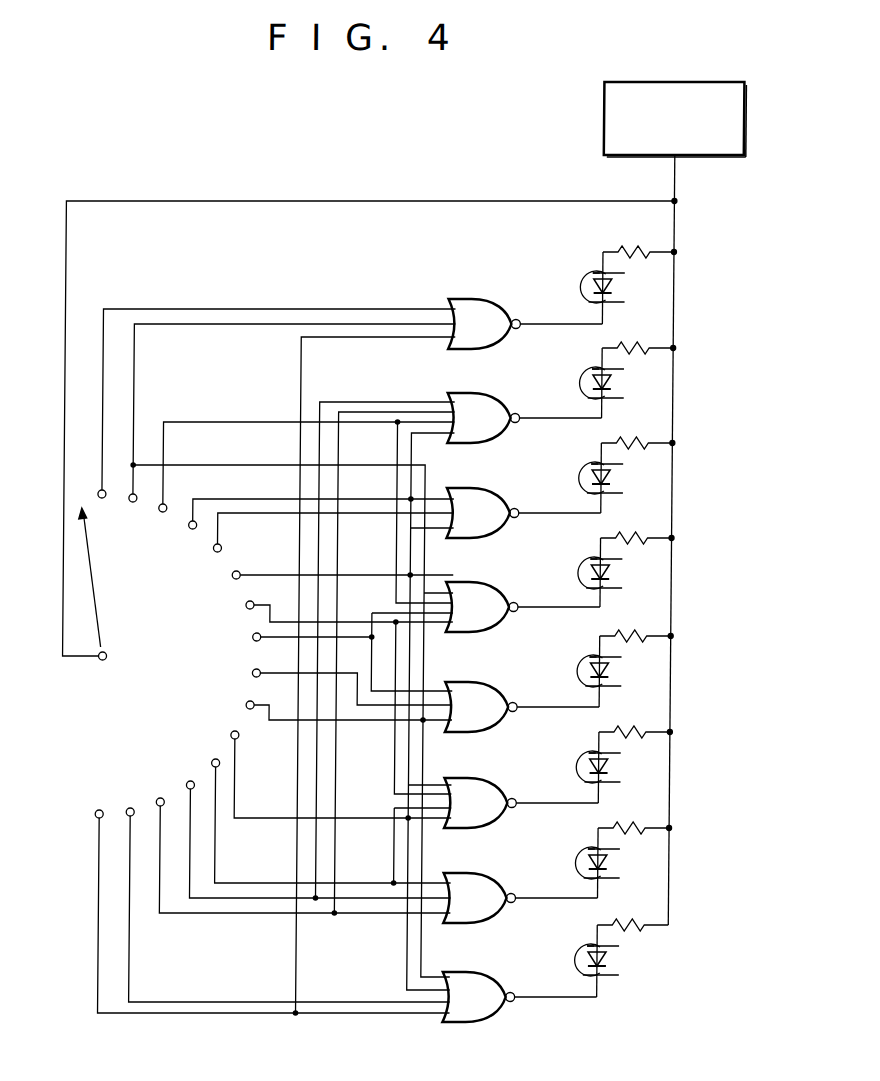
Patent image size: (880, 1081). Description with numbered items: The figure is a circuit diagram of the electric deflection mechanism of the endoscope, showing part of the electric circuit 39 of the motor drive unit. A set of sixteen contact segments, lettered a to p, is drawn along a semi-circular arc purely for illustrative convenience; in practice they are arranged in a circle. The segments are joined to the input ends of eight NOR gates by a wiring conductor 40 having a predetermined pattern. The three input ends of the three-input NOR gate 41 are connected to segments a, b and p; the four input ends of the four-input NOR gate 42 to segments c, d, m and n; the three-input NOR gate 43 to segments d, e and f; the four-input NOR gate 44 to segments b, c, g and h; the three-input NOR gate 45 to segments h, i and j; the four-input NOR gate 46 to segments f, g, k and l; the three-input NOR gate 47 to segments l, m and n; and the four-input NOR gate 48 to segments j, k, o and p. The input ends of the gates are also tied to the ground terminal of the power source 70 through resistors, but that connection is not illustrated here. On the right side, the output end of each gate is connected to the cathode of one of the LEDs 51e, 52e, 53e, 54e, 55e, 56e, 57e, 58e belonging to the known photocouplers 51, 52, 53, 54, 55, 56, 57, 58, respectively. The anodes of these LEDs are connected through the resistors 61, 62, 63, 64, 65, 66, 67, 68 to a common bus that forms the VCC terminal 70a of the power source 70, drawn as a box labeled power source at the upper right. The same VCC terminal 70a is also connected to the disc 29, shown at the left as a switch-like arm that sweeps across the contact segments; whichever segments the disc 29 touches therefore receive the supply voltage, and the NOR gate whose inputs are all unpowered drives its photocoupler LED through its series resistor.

The disc 29 is at (97, 606).
The electric circuit 39 is at (364, 188).
The wiring conductor 40 is at (351, 296).
The 3-input NOR gate 41 is at (473, 310).
The 4-input NOR gate 42 is at (473, 404).
The 3-input NOR gate 43 is at (473, 499).
The 4-input NOR gate 44 is at (473, 593).
The 3-input NOR gate 45 is at (473, 693).
The 4-input NOR gate 46 is at (473, 789).
The 3-input NOR gate 47 is at (473, 884).
The 4-input NOR gate 48 is at (473, 983).
The photocoupler 51 is at (581, 290).
The photocoupler 52 is at (581, 386).
The photocoupler 53 is at (581, 481).
The photocoupler 54 is at (581, 576).
The photocoupler 55 is at (581, 674).
The photocoupler 56 is at (581, 770).
The photocoupler 57 is at (581, 866).
The photocoupler 58 is at (581, 963).
The LED 51e is at (594, 272).
The LED 52e is at (594, 368).
The LED 53e is at (594, 463).
The LED 54e is at (594, 558).
The LED 55e is at (594, 656).
The LED 56e is at (594, 752).
The LED 57e is at (594, 848).
The LED 58e is at (594, 945).
The resistor 61 is at (641, 249).
The resistor 62 is at (641, 345).
The resistor 63 is at (641, 440).
The resistor 64 is at (641, 535).
The resistor 65 is at (641, 633).
The resistor 66 is at (641, 729).
The resistor 67 is at (641, 825).
The resistor 68 is at (641, 922).
The power source 70 is at (603, 128).
The VCC terminal 70a is at (674, 160).